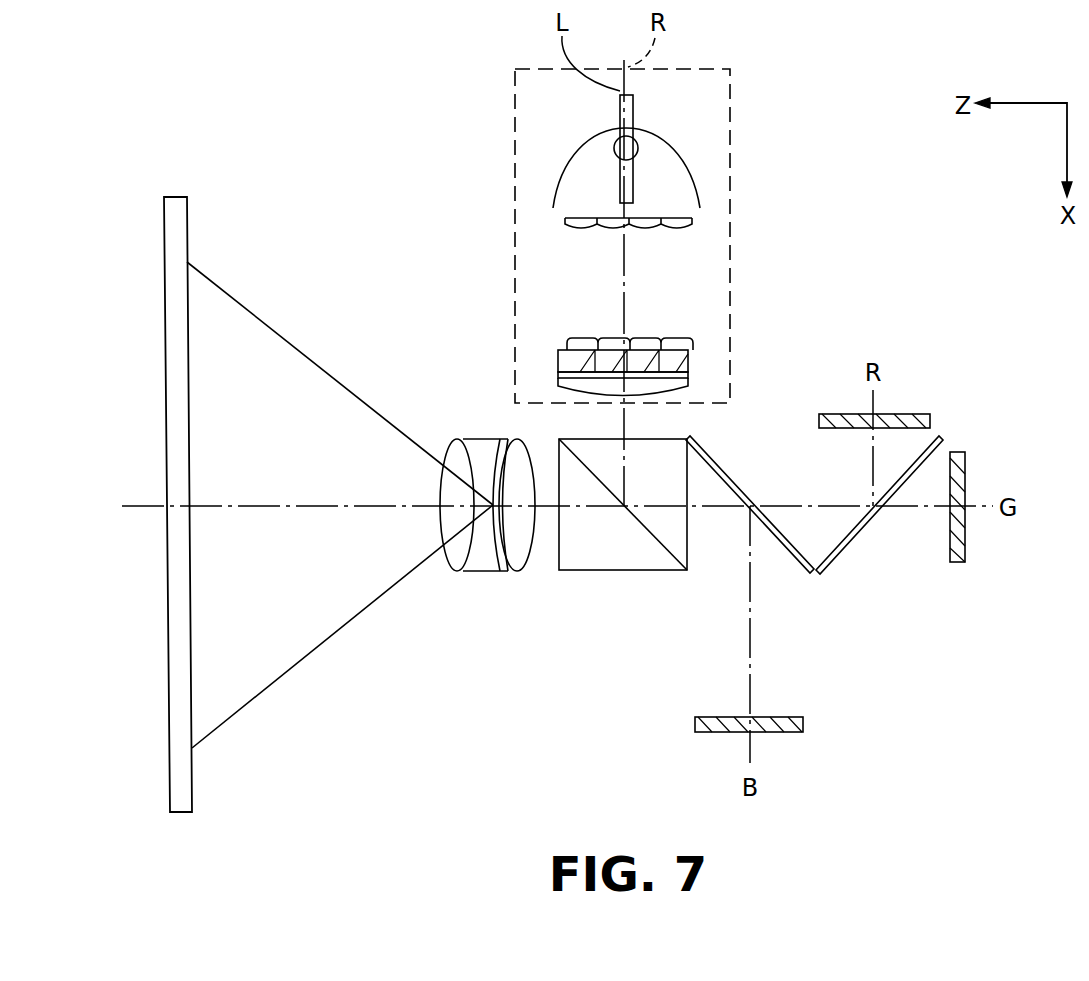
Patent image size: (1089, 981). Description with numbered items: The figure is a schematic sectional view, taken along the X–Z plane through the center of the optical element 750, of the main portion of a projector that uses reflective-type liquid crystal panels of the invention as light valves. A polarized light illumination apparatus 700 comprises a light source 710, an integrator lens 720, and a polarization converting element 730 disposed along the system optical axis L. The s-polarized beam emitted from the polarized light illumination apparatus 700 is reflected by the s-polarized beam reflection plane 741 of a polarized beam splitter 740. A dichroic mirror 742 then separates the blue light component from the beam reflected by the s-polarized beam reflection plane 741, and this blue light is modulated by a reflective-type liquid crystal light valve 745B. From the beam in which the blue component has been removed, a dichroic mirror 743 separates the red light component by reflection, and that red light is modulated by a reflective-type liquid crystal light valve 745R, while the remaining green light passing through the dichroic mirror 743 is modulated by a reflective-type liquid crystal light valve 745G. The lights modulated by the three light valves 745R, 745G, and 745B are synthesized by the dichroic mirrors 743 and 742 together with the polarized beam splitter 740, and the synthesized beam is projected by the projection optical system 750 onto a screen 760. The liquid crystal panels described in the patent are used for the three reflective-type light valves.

The polarized light illumination apparatus 700 is at (730, 95).
The light source 710 is at (667, 149).
The integrator lens 720 is at (693, 222).
The polarization converting element 730 is at (694, 348).
The polarized beam splitter 740 is at (597, 552).
The s-polarized beam reflection plane 741 is at (663, 550).
The dichroic mirror 742 is at (780, 543).
The dichroic mirror 743 is at (857, 537).
The reflective-type liquid crystal light valve 745R is at (905, 413).
The reflective-type liquid crystal light valve 745G is at (968, 477).
The reflective-type liquid crystal light valve 745B is at (804, 723).
The projection optical system 750 is at (480, 422).
The screen 760 is at (192, 693).